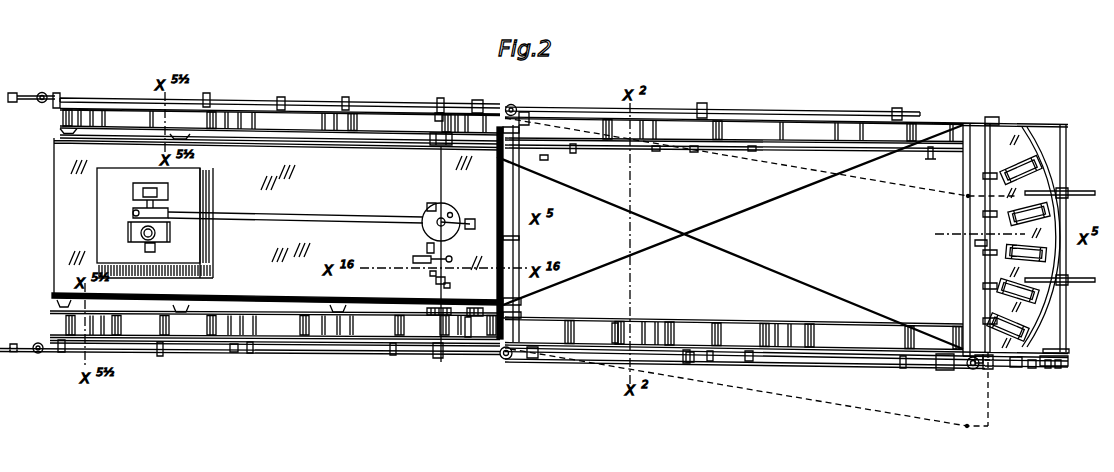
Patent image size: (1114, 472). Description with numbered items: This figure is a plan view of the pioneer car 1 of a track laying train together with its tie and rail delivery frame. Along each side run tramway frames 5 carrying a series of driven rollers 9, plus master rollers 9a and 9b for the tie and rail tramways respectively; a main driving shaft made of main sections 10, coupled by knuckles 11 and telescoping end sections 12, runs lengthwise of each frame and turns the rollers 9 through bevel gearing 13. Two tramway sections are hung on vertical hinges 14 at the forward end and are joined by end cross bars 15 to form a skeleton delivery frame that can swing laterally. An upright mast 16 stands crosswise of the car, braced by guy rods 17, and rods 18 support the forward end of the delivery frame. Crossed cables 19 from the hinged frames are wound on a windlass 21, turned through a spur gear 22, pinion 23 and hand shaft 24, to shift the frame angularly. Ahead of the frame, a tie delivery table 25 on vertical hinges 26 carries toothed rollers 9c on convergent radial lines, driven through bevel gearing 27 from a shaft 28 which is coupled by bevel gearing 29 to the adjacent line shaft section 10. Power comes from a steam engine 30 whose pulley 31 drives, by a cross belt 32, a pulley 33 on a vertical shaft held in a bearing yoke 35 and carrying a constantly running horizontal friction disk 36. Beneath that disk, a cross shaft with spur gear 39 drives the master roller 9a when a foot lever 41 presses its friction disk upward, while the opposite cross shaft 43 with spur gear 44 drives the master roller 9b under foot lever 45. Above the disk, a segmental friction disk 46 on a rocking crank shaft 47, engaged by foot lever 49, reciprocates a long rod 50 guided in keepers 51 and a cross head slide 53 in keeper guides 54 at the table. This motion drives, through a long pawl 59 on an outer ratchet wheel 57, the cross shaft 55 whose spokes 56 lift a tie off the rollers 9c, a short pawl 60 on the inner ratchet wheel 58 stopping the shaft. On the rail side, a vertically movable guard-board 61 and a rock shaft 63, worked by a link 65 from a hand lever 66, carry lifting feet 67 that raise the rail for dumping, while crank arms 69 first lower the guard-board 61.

The pioneer car 1 is at (252, 231).
The tramway frame 5 is at (133, 112).
The driven roller 9 is at (62, 118).
The master roller of tie tramway 9a is at (437, 357).
The master roller of rail tramway 9b is at (438, 115).
The toothed roller 9c is at (1021, 163).
The main shaft section 10 is at (281, 98).
The knuckle 11 is at (46, 95).
The telescoping end section 12 is at (18, 95).
The bevel gearing 13 is at (62, 98).
The vertical hinge 14 is at (523, 112).
The end cross bar 15 is at (521, 212).
The upright frame or mast 16 is at (521, 241).
The guy rod 17 is at (238, 147).
The support rod 18 is at (694, 153).
The crossed cable 19 is at (752, 262).
The windlass 21 is at (497, 182).
The spur gear 22 is at (512, 314).
The pinion 23 is at (504, 300).
The hand shaft 24 is at (468, 332).
The tie delivery table 25 is at (1033, 148).
The vertical hinge 26 is at (992, 117).
The bevel gearing 27 is at (983, 176).
The table shaft 28 is at (985, 243).
The bevel gearing 29 is at (988, 369).
The steam engine 30 is at (140, 238).
The engine pulley 31 is at (160, 207).
The cross belt 32 is at (330, 217).
The pulley 33 is at (450, 211).
The bearing yoke 35 is at (453, 219).
The horizontal friction disk 36 is at (470, 230).
The spur gear 39 is at (430, 316).
The foot lever 41 is at (413, 260).
The cross shaft 43 is at (440, 167).
The spur gear 44 is at (430, 141).
The foot lever 45 is at (428, 207).
The segmental friction disk 46 is at (452, 259).
The rocking crank shaft 47 is at (436, 289).
The foot lever 49 is at (431, 274).
The long rod 50 is at (847, 367).
The guiding keeper 51 is at (935, 372).
The cross head slide 53 is at (1020, 368).
The keeper guide 54 is at (1033, 370).
The cross shaft 55 is at (1062, 304).
The spoke 56 is at (1076, 191).
The outer ratchet wheel 57 is at (1047, 364).
The inner ratchet wheel 58 is at (1058, 357).
The long pawl 59 is at (1048, 366).
The short pawl 60 is at (1057, 368).
The guard-board 61 is at (751, 152).
The rock shaft 63 is at (655, 152).
The link 65 is at (543, 160).
The hand lever 66 is at (447, 284).
The lifting foot 67 is at (822, 150).
The crank arm 69 is at (575, 153).